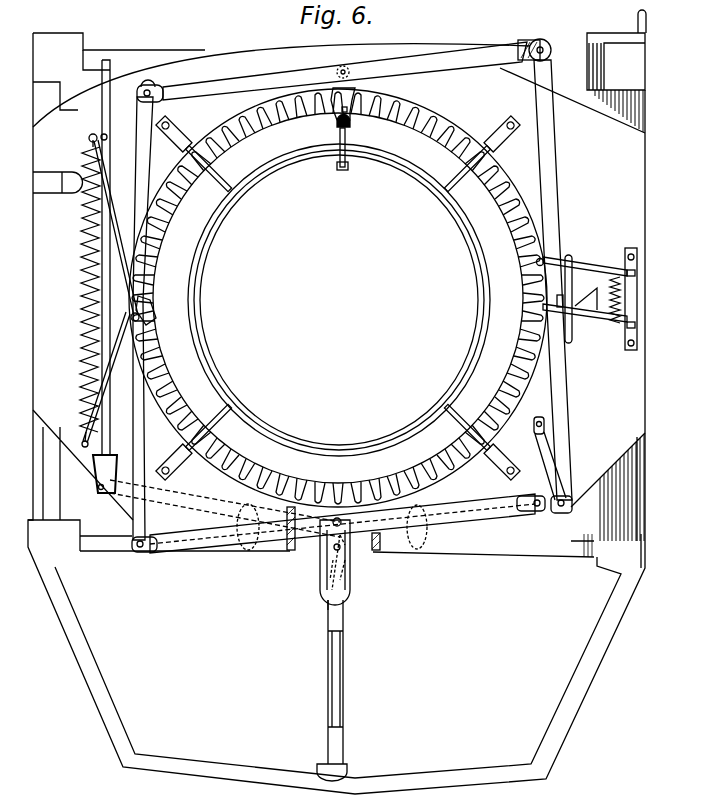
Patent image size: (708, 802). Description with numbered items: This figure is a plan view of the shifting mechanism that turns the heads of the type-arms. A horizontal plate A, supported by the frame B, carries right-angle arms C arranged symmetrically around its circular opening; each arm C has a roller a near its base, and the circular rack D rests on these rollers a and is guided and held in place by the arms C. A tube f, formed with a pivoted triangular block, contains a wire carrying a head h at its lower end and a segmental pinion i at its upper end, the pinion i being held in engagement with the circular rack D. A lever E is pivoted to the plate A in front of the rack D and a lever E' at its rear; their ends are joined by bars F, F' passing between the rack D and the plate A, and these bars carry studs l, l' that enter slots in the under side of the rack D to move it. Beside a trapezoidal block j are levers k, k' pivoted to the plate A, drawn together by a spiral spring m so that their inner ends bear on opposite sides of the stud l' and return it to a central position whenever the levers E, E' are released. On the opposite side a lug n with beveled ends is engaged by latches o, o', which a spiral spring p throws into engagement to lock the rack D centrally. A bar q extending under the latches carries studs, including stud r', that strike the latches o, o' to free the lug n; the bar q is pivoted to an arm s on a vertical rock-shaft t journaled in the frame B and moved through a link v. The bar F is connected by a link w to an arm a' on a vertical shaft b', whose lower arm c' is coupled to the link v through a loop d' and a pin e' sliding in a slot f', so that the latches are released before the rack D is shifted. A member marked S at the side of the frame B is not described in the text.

The frame B is at (645, 478).
The support S is at (640, 517).
The horizontal plate A is at (338, 298).
The circular rack D is at (473, 136).
The right-angle arms C is at (338, 298).
The lever E' is at (344, 70).
The bar F is at (144, 310).
The bar F' is at (553, 280).
The lever E is at (333, 531).
The arm a' is at (544, 518).
The link w is at (556, 476).
The roller a is at (320, 561).
The link v is at (330, 653).
The rock-shaft t is at (248, 550).
The vertical shaft b' is at (417, 543).
The arm c' is at (353, 559).
The loop d' is at (354, 586).
The pin e' is at (315, 587).
The slot f' is at (314, 619).
The arm s is at (190, 505).
The bar q is at (106, 463).
The stud r' is at (107, 257).
The spiral spring p is at (80, 286).
The latch o is at (116, 228).
The latch o' is at (106, 377).
The stud l is at (124, 301).
The lug n is at (152, 308).
The segmental pinion i is at (345, 110).
The tube f is at (356, 145).
The head h is at (347, 170).
The stud l' is at (554, 244).
The lever k' is at (585, 263).
The lever k is at (585, 326).
The spiral spring m is at (606, 325).
The trapezoidal block j is at (577, 299).